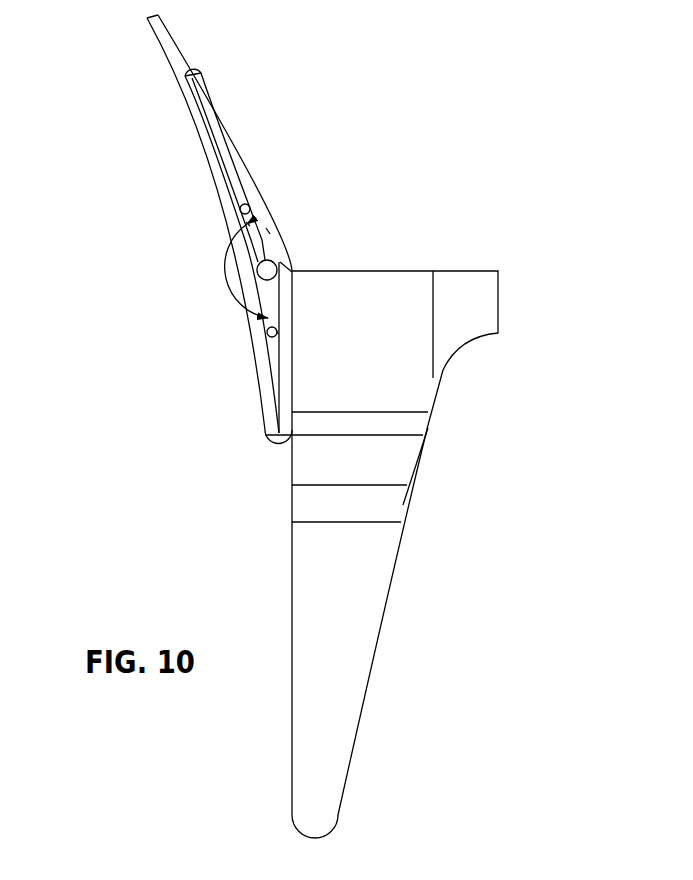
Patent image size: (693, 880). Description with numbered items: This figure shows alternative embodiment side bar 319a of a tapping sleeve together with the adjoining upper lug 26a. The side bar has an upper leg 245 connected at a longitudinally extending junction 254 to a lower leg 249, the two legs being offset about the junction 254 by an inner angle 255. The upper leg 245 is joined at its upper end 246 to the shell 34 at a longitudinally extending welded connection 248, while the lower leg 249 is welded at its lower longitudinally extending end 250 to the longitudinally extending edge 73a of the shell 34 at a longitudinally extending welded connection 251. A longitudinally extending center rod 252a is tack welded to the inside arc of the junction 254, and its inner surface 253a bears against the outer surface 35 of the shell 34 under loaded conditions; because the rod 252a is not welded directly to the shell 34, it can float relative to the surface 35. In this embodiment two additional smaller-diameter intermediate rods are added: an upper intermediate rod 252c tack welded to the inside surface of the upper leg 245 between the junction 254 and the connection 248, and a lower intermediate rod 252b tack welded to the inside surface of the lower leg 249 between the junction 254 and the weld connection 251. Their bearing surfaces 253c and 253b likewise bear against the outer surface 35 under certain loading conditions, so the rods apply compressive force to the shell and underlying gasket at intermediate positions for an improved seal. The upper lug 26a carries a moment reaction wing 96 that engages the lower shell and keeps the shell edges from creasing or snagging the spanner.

The shell 34 is at (162, 32).
The welded connection 248 is at (196, 64).
The upper end 246 is at (198, 80).
The upper leg 245 is at (227, 145).
The lower leg 249 is at (283, 388).
The longitudinally extending edge 73a is at (272, 428).
The welded connection 251 is at (279, 443).
The lower longitudinally extending end 250 is at (283, 432).
The junction 254 is at (291, 260).
The rod 252a is at (268, 268).
The inner surface 253a is at (264, 270).
The bearing surface 253c is at (240, 209).
The bearing surface 253b is at (267, 334).
The upper intermediate rod 252c is at (248, 224).
The intermediate rod 252b is at (277, 332).
The outer surface 35 is at (269, 231).
The inner angle 255 is at (224, 280).
The upper lug 26a is at (440, 255).
The moment reaction wing 96 is at (315, 760).
The side bar 319a is at (403, 75).